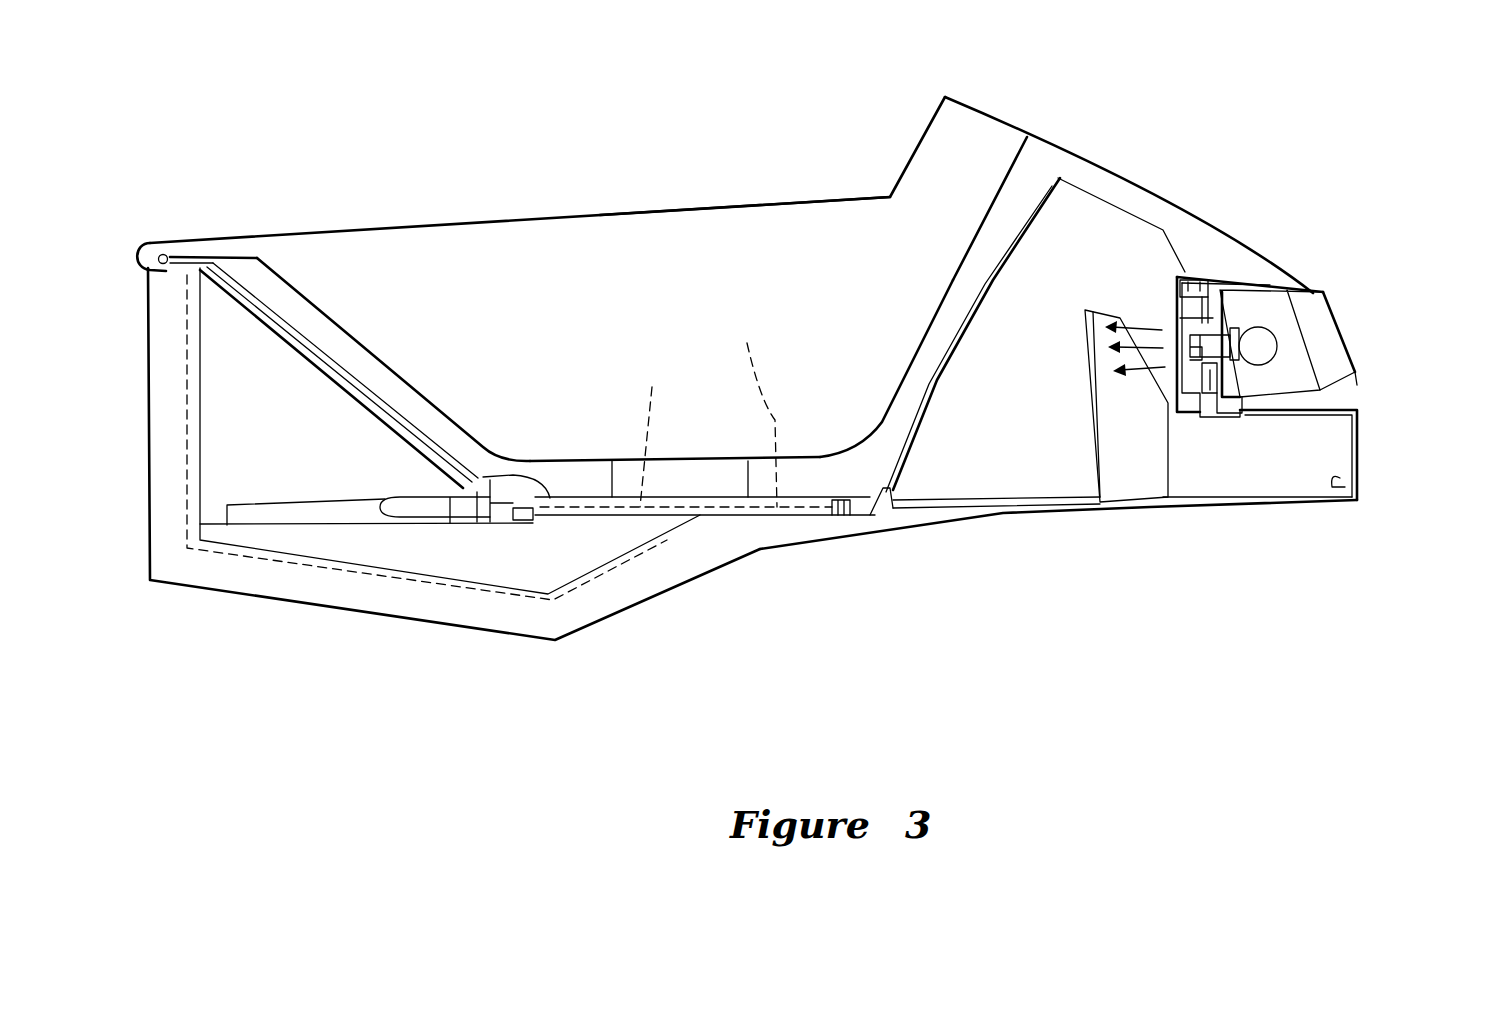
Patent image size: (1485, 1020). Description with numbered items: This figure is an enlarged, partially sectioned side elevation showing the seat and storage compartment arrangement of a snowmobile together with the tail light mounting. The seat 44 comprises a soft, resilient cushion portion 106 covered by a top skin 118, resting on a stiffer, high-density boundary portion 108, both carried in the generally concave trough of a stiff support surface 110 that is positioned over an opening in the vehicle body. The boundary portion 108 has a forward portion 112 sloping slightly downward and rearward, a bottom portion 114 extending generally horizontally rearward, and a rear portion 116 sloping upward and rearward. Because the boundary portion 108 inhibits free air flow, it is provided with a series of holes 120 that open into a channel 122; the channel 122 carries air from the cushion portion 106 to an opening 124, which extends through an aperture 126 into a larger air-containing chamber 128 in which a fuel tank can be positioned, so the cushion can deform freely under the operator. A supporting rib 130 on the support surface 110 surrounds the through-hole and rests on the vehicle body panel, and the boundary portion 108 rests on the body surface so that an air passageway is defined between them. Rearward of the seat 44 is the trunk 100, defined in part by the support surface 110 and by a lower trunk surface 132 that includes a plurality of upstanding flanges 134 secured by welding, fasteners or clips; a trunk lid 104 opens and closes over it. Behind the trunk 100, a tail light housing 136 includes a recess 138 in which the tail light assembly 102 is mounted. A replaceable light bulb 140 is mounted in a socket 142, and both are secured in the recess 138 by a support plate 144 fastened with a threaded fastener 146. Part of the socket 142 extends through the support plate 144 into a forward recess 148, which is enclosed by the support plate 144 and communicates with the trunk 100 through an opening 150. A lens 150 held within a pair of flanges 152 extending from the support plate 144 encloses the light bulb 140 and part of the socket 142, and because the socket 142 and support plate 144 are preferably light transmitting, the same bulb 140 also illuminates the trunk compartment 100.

The seat 44 is at (660, 194).
The trunk 100 is at (998, 430).
The tail light assembly 102 is at (1378, 214).
The trunk lid 104 is at (1143, 183).
The cushion portion 106 is at (760, 230).
The boundary portion 108 is at (1040, 168).
The support surface 110 is at (997, 281).
The forward portion 112 is at (422, 412).
The bottom portion 114 is at (698, 472).
The rear portion 116 is at (943, 327).
The top skin 118 is at (517, 220).
The holes 120 is at (702, 404).
The channel 122 is at (808, 513).
The opening 124 is at (527, 490).
The aperture 126 is at (480, 487).
The chamber 128 is at (242, 452).
The supporting rib 130 is at (527, 522).
The lower trunk surface 132 is at (998, 514).
The upstanding flanges 134 is at (892, 495).
The tail light housing 136 is at (1362, 425).
The recess 138 is at (1340, 397).
The light bulb 140 is at (1258, 350).
The socket 142 is at (1187, 400).
The support plate 144 is at (1228, 298).
The threaded fastener 146 is at (1193, 273).
The recess 148 is at (1180, 398).
The lens 150 is at (1177, 302).
The flanges 152 is at (1230, 273).